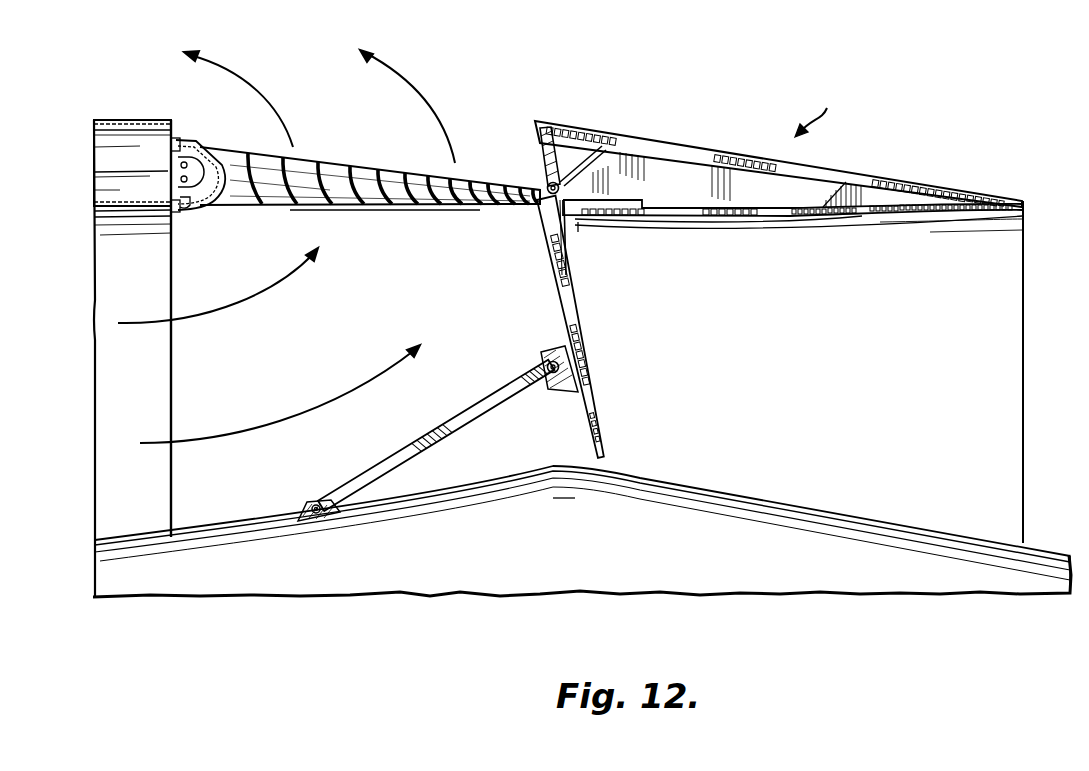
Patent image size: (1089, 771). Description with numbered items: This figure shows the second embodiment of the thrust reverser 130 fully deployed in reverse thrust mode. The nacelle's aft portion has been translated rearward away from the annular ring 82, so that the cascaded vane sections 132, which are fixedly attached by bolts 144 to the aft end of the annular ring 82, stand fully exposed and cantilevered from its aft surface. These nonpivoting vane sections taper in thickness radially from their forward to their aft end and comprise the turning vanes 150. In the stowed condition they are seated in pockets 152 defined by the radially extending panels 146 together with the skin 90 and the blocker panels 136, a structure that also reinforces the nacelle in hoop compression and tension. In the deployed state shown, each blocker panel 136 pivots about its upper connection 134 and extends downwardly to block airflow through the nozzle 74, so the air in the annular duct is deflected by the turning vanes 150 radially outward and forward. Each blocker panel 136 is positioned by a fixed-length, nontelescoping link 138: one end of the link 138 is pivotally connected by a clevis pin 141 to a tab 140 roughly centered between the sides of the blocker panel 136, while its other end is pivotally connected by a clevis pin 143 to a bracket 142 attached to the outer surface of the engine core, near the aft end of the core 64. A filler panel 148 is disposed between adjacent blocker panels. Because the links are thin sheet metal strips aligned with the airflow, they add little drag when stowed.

The annular ring 82 is at (106, 119).
The bolts 144 is at (184, 137).
The cascaded vane sections 132 is at (355, 170).
The turning vanes 150 is at (300, 186).
The pockets 152 is at (544, 156).
The pivot pin 134 is at (546, 186).
The skin 90 is at (656, 139).
The thrust reverser 130 is at (819, 108).
The panels 146 is at (687, 190).
The filler panel 148 is at (744, 220).
The blocker panel 136 is at (540, 287).
The tab 140 is at (550, 352).
The clevis pin 141 is at (546, 368).
The link 138 is at (410, 443).
The clevis pin 143 is at (320, 498).
The bracket 142 is at (304, 510).
The nozzle 74 is at (944, 358).
The aft end of the core 64 is at (940, 523).